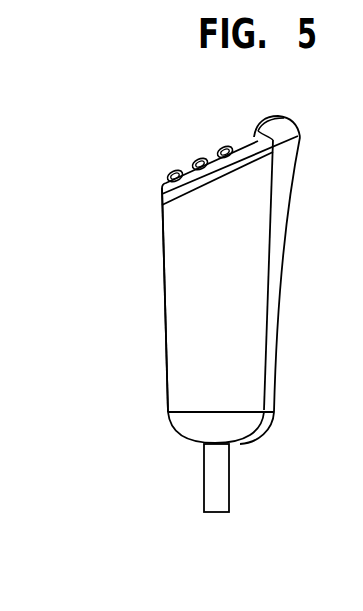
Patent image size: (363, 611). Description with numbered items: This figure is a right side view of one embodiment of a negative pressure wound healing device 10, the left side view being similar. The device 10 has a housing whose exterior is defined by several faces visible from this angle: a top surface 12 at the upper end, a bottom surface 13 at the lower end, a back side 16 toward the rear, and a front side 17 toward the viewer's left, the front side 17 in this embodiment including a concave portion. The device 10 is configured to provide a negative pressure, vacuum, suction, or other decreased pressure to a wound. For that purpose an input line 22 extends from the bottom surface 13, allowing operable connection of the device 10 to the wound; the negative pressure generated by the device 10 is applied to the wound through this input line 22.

The negative pressure wound healing device 10 is at (104, 149).
The top surface 12 is at (240, 137).
The bottom surface 13 is at (193, 442).
The back side 16 is at (278, 377).
The front side 17 is at (164, 312).
The input line 22 is at (230, 497).